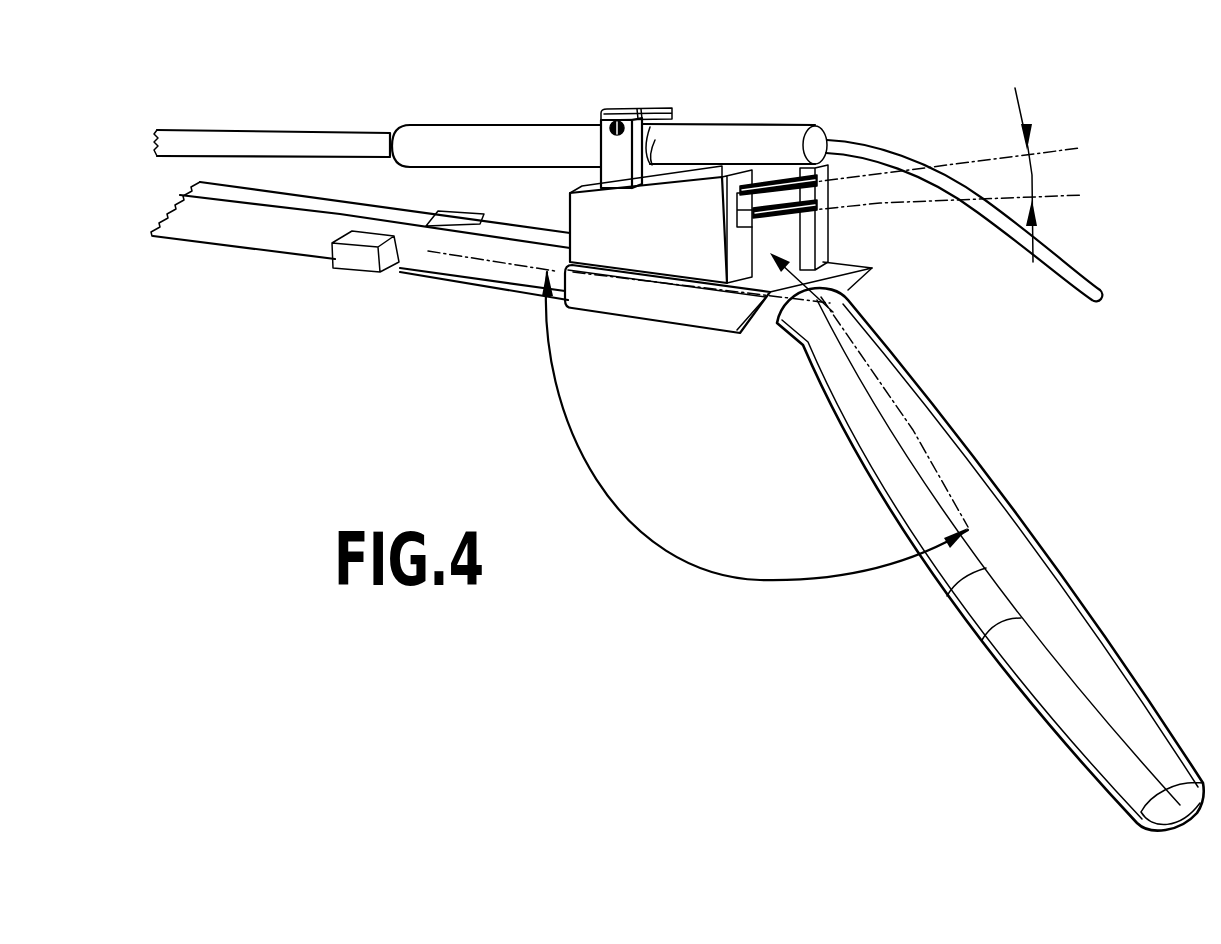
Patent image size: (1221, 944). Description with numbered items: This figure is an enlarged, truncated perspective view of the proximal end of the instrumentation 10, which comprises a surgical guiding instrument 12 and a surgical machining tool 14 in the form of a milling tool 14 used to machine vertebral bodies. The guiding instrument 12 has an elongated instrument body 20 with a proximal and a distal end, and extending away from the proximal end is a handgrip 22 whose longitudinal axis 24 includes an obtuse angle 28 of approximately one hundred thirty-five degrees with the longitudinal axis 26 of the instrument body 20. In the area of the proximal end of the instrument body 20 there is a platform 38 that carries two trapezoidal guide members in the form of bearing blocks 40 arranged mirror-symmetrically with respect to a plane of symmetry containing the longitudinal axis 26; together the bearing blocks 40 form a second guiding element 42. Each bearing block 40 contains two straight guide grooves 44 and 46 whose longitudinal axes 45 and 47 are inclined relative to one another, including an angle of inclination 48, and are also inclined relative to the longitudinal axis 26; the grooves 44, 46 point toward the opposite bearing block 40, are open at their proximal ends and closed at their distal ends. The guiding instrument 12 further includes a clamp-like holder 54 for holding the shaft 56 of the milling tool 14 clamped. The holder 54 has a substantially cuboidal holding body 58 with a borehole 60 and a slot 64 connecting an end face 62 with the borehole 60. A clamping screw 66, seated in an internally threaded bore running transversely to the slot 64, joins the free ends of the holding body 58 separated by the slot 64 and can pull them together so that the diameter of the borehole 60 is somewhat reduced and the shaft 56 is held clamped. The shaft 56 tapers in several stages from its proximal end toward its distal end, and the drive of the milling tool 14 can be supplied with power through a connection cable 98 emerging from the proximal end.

The instrumentation 10 is at (677, 415).
The surgical guiding instrument 12 is at (360, 290).
The surgical machining tool 14 is at (272, 93).
The instrument body 20 is at (484, 306).
The handgrip 22 is at (990, 559).
The longitudinal axis 24 is at (1012, 553).
The longitudinal axis 26 is at (718, 323).
The obtuse angle 28 is at (755, 425).
The platform 38 is at (703, 319).
The bearing blocks 40 is at (713, 224).
The second guiding element 42 is at (892, 294).
The guide groove 44 is at (800, 230).
The longitudinal axis 45 is at (962, 175).
The guide groove 46 is at (741, 142).
The longitudinal axis 47 is at (952, 133).
The angle of inclination 48 is at (1002, 175).
The holder 54 is at (734, 93).
The shaft 56 is at (496, 112).
The holding body 58 is at (594, 123).
The borehole 60 is at (641, 184).
The end face 62 is at (652, 71).
The slot 64 is at (640, 70).
The clamping screw 66 is at (599, 78).
The connection cable 98 is at (984, 220).